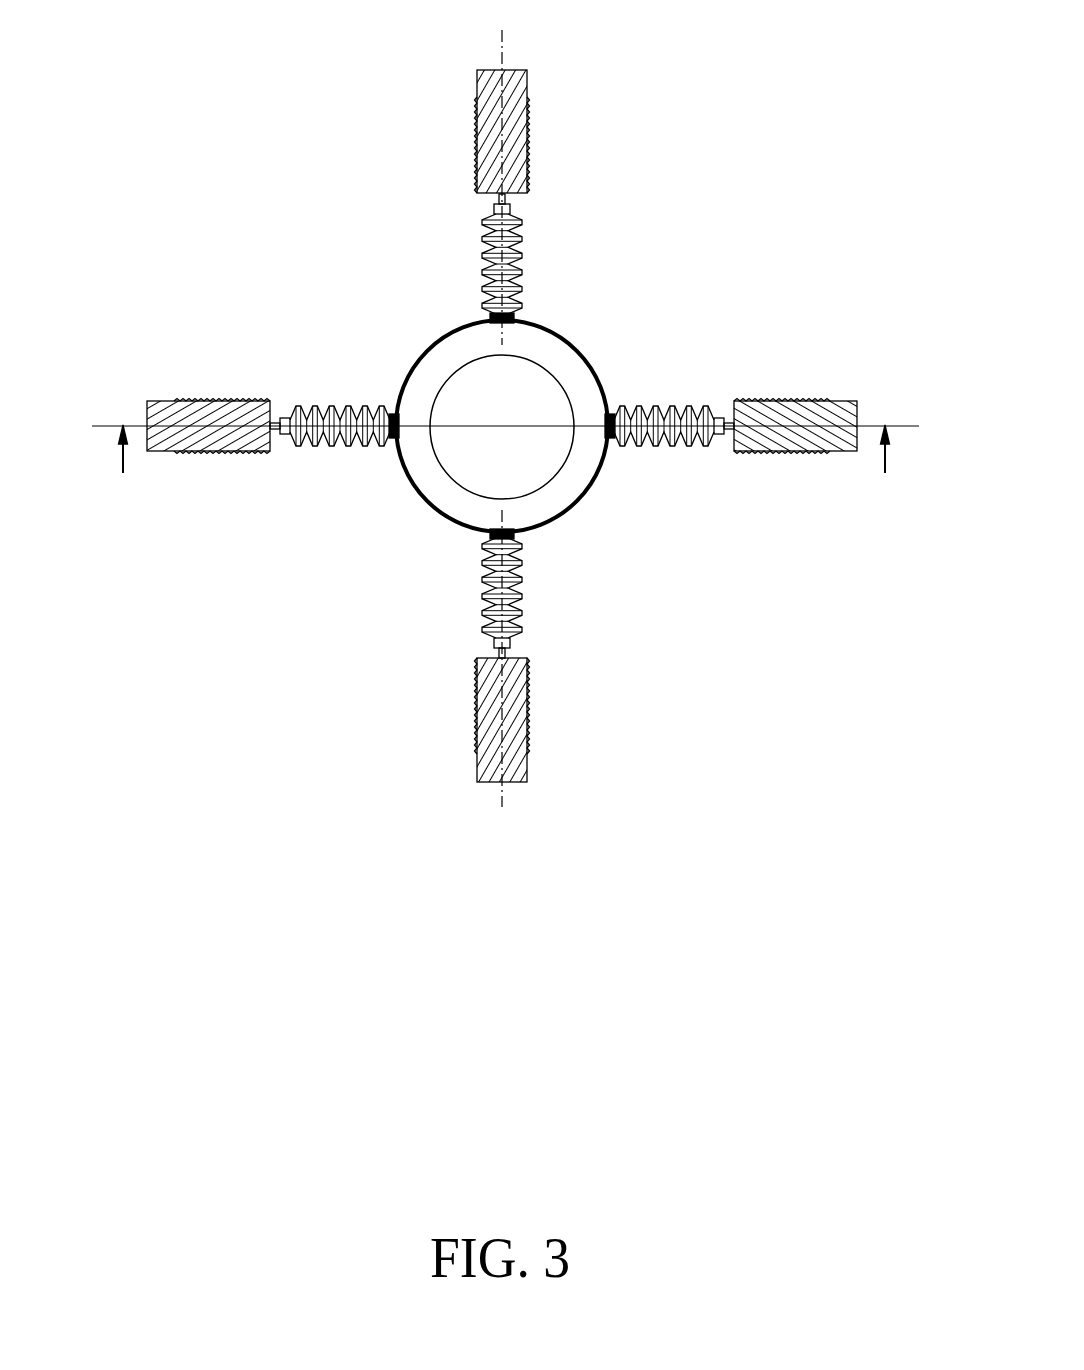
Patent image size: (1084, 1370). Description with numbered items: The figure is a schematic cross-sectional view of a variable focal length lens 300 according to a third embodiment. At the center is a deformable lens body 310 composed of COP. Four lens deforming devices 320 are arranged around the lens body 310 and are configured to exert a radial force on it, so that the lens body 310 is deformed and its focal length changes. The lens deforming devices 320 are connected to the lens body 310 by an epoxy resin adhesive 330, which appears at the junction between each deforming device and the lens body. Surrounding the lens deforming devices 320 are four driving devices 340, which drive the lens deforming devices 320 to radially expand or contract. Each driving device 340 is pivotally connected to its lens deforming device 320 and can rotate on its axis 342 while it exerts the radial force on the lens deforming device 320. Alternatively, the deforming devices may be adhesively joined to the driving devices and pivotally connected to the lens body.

The variable focal length lens 300 is at (216, 117).
The deformable lens body 310 is at (443, 374).
The lens deforming device 320 is at (507, 235).
The epoxy resin adhesive 330 is at (513, 318).
The driving device 340 is at (513, 121).
The axis 342 is at (502, 53).